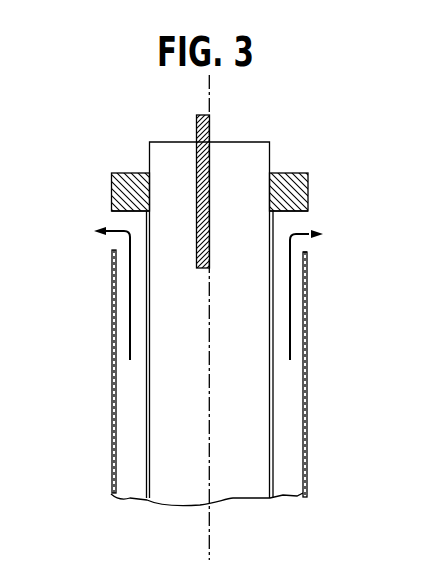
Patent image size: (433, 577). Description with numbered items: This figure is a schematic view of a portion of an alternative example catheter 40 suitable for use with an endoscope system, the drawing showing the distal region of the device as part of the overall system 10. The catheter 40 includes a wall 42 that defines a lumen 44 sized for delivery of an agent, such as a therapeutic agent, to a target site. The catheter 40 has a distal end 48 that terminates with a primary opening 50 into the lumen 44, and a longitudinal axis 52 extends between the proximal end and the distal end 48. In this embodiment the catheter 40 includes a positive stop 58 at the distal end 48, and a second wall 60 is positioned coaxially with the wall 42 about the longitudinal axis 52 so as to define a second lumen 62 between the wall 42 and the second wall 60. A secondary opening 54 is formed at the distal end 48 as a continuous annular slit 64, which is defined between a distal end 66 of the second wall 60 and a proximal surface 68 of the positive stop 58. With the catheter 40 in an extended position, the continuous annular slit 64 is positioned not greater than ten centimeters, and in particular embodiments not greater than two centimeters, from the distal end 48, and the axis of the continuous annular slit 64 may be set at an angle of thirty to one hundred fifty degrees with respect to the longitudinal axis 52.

The valve assembly 10 is at (427, 565).
The catheter 40 is at (316, 325).
The wall 42 is at (270, 410).
The lumen 44 is at (162, 132).
The distal end 48 is at (81, 227).
The primary opening 50 is at (254, 129).
The longitudinal axis 52 is at (207, 523).
The secondary opening 54 is at (318, 211).
The positive stop 58 is at (130, 172).
The second wall 60 is at (112, 442).
The second lumen 62 is at (128, 402).
The continuous annular slit 64 is at (104, 248).
The distal end of second wall 66 is at (313, 257).
The proximal surface 68 is at (122, 215).